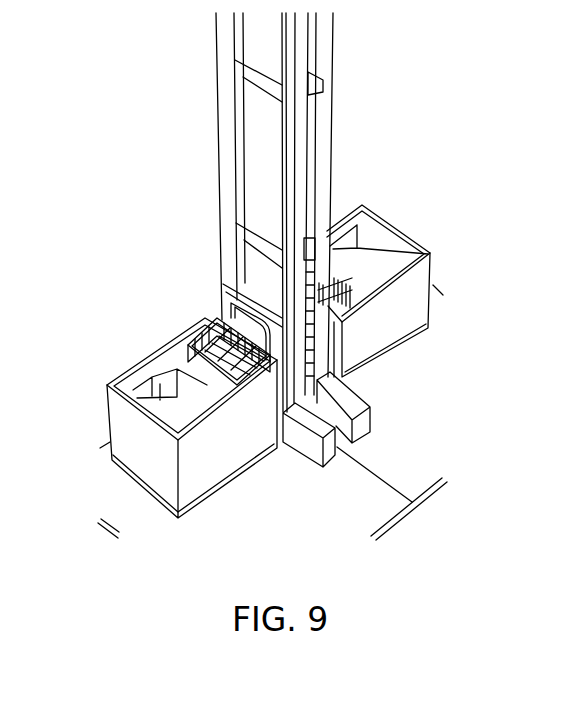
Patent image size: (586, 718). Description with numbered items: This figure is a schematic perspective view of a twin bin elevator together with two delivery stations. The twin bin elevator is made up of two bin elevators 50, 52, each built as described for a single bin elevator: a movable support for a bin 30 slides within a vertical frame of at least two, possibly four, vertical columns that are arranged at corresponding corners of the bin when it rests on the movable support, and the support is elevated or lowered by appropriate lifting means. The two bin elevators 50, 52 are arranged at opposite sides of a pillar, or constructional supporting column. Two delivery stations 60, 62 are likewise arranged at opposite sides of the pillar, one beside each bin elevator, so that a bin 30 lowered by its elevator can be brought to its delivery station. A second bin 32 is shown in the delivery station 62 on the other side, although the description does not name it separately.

The bin elevator 50 is at (216, 82).
The bin elevator 52 is at (333, 92).
The bin 30 is at (218, 318).
The basket 32 is at (355, 258).
The delivery station 60 is at (107, 413).
The delivery station 62 is at (432, 262).